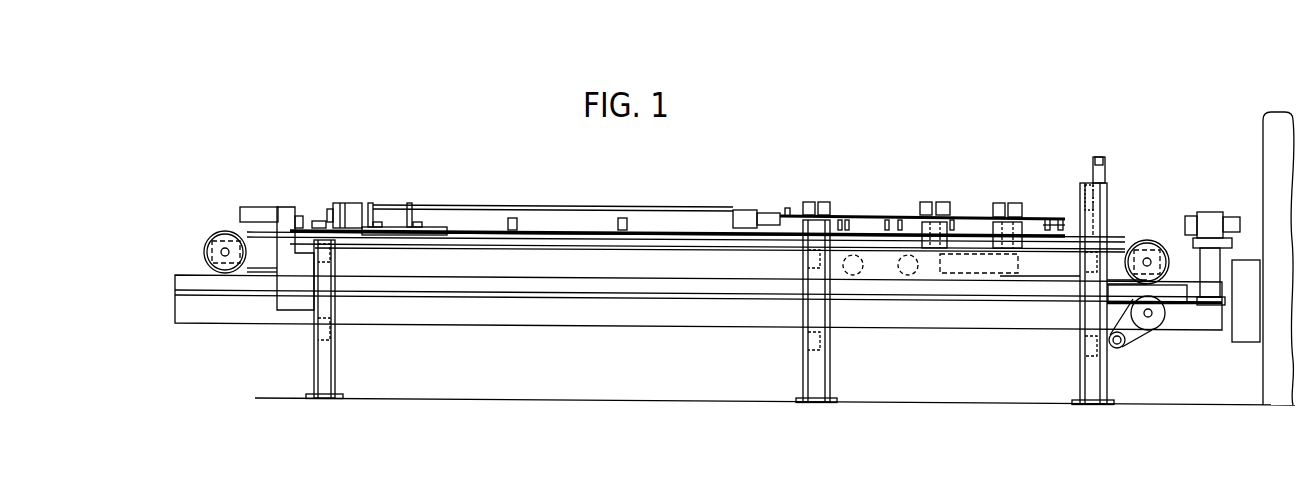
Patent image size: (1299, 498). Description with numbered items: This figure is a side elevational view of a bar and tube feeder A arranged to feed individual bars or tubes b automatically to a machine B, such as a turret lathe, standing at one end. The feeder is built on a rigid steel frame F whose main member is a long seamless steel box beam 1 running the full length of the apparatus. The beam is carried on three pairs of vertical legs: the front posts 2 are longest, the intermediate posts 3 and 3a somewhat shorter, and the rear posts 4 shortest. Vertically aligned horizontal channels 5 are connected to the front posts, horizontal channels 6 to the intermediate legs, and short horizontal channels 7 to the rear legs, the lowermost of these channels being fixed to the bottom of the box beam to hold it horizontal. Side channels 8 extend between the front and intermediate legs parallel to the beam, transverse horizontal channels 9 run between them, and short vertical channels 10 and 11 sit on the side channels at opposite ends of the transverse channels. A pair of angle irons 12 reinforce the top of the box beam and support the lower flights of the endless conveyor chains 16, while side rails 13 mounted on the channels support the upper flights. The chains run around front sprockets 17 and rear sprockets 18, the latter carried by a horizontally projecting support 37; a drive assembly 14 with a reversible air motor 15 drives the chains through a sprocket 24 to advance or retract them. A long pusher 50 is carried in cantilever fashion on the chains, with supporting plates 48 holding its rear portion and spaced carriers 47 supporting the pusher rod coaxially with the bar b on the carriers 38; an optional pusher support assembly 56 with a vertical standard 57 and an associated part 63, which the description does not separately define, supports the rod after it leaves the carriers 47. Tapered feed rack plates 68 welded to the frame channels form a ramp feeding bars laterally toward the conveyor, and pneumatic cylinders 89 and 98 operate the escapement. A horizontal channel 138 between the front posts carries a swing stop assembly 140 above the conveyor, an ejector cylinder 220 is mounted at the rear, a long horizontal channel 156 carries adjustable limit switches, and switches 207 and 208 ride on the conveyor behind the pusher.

The box beam 1 is at (214, 323).
The front posts 2 is at (1081, 370).
The intermediate posts 3 is at (831, 370).
The intermediate posts 3a is at (803, 205).
The rear posts 4 is at (336, 373).
The horizontal channels 5 is at (1083, 262).
The horizontal channels 6 is at (806, 255).
The horizontal channels 7 is at (334, 254).
The side channels 8 is at (1025, 279).
The transverse horizontal channels 9 is at (940, 262).
The short vertical channels 10 is at (946, 222).
The short vertical channels 11 is at (925, 228).
The angle irons 12 is at (190, 274).
The side rails 13 is at (250, 233).
The drive assembly 14 is at (1146, 345).
The air motor 15 is at (1110, 349).
The conveyor chains 16 is at (634, 276).
The front sprockets 17 is at (1168, 260).
The rear sprockets 18 is at (207, 244).
The sprocket 24 is at (1166, 313).
The horizontally projecting support 37 is at (266, 254).
The carriers 38 is at (845, 220).
The carriers 47 is at (516, 219).
The supporting plates 48 is at (371, 203).
The pusher 50 is at (628, 205).
The pusher support assembly 56 is at (1240, 222).
The vertical standard 57 is at (1217, 285).
The transfer unit head 63 is at (1240, 230).
The feed rack plates 68 is at (826, 203).
The pneumatic cylinder 89 is at (912, 276).
The pneumatic cylinder 98 is at (857, 276).
The horizontal channel 138 is at (1087, 188).
The swing stop assembly 140 is at (1100, 155).
The horizontal channel 156 is at (424, 236).
The limit switch 207 is at (336, 211).
The switch 208 is at (300, 212).
The ejector cylinder 220 is at (254, 207).
The feeder A is at (403, 128).
The machine B is at (1260, 113).
The frame F is at (621, 340).
The bar or tube b is at (1043, 220).